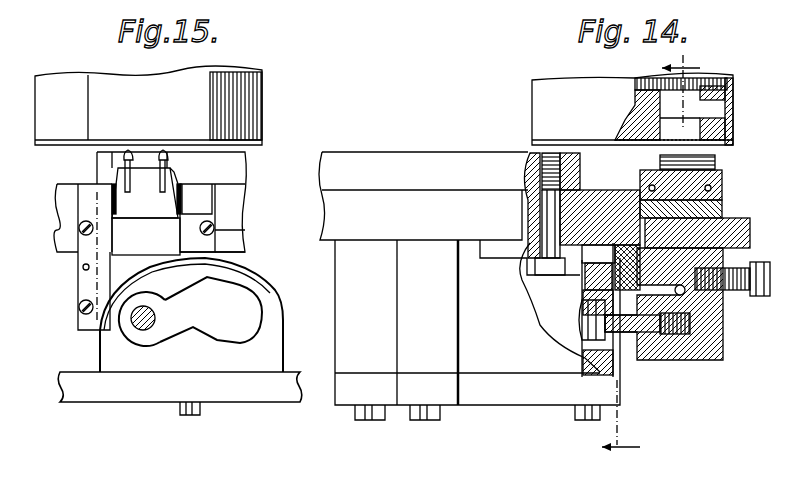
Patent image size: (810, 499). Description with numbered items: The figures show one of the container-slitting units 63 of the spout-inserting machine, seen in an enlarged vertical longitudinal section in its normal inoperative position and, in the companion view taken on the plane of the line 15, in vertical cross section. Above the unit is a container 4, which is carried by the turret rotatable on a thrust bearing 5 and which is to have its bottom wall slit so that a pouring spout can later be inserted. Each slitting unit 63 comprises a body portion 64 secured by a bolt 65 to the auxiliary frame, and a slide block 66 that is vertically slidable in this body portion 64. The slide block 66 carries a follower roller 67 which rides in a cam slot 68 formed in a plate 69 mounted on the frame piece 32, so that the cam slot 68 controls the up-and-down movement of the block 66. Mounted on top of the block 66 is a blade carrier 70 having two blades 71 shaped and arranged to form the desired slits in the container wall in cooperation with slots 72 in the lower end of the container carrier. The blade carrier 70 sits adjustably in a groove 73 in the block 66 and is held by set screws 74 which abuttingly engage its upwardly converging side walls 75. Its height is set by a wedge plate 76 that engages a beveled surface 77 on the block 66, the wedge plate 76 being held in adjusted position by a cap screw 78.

In FIG. 15, the container 4 is at (148, 105).
In FIG. 14, the container 4 is at (632, 100).
In FIG. 14, the thrust bearing 5 is at (727, 82).
In FIG. 14, the line 15— 15 is at (652, 258).
In FIG. 15, the frame piece 32 is at (230, 228).
In FIG. 14, the frame piece 32 is at (326, 232).
In FIG. 15, the slitting unit 63 is at (95, 170).
In FIG. 14, the slitting unit 63 is at (690, 365).
In FIG. 14, the body portion 64 is at (600, 200).
In FIG. 14, the bolt 65 is at (536, 155).
In FIG. 14, the slide block 66 is at (727, 360).
In FIG. 15, the follower roller 67 is at (152, 326).
In FIG. 14, the follower roller 67 is at (618, 340).
In FIG. 15, the cam slot 68 is at (216, 340).
In FIG. 14, the cam slot 68 is at (578, 297).
In FIG. 15, the plate 69 is at (268, 352).
In FIG. 14, the plate 69 is at (600, 370).
In FIG. 15, the blade carrier 70 is at (146, 193).
In FIG. 14, the blade carrier 70 is at (724, 185).
In FIG. 15, the blades 71 is at (152, 158).
In FIG. 14, the blades 71 is at (715, 162).
In FIG. 14, the slots 72 is at (705, 118).
In FIG. 15, the groove 73 is at (108, 197).
In FIG. 15, the set screws 74 is at (183, 178).
In FIG. 15, the side walls 75 is at (178, 172).
In FIG. 15, the wedge plate 76 is at (146, 236).
In FIG. 14, the wedge plate 76 is at (742, 218).
In FIG. 14, the beveled surface 77 is at (598, 267).
In FIG. 14, the cap screw 78 is at (752, 296).